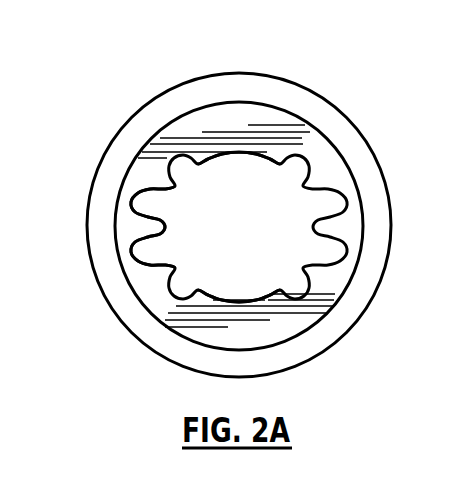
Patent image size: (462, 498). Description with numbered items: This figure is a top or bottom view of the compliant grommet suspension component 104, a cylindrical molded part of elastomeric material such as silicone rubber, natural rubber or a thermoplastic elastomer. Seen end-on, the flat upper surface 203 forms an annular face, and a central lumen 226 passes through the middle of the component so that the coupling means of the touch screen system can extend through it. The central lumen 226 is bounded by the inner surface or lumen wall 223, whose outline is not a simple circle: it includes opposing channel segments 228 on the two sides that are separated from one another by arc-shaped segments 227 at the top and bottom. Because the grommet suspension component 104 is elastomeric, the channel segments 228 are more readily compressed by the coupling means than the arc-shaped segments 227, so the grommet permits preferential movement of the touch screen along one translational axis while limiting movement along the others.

The grommet suspension component 104 is at (122, 110).
The flat upper surface 203 is at (258, 115).
The inner surface or lumen wall 223 is at (255, 164).
The central lumen 226 is at (257, 230).
The arc-shaped segments 227 is at (265, 299).
The channel segments 228 is at (145, 250).